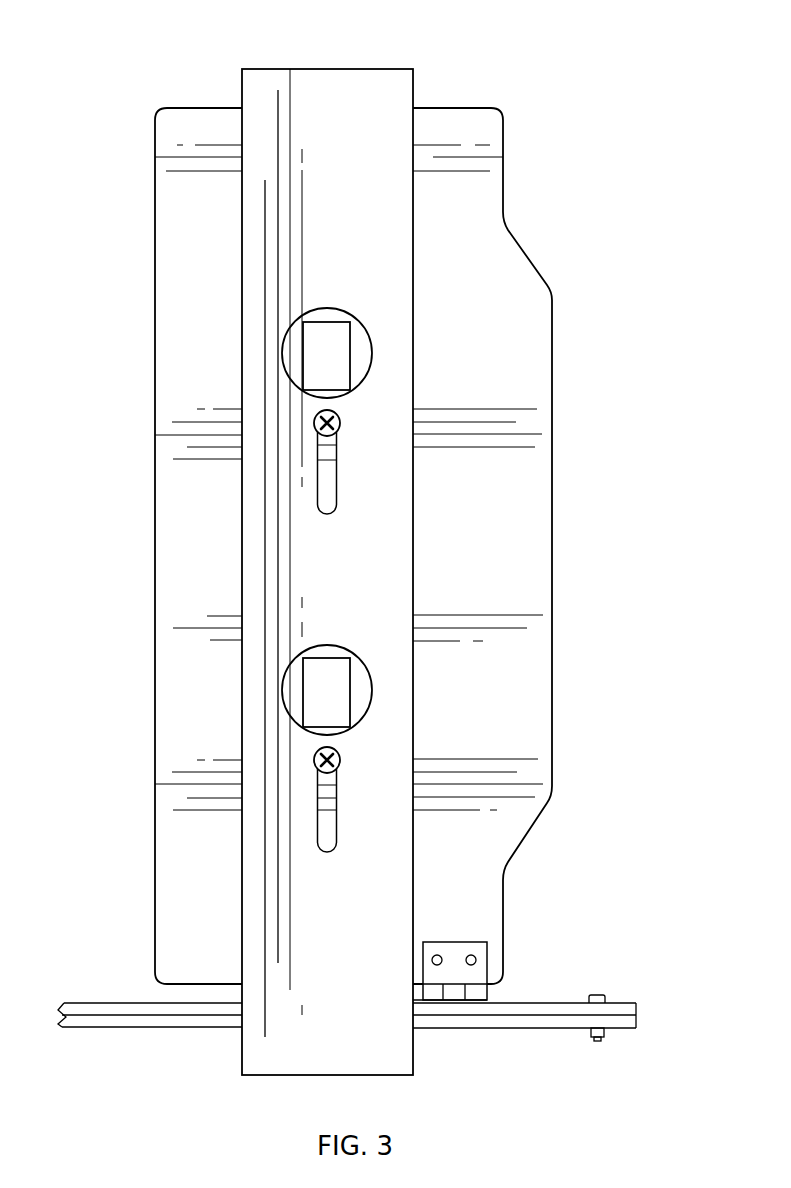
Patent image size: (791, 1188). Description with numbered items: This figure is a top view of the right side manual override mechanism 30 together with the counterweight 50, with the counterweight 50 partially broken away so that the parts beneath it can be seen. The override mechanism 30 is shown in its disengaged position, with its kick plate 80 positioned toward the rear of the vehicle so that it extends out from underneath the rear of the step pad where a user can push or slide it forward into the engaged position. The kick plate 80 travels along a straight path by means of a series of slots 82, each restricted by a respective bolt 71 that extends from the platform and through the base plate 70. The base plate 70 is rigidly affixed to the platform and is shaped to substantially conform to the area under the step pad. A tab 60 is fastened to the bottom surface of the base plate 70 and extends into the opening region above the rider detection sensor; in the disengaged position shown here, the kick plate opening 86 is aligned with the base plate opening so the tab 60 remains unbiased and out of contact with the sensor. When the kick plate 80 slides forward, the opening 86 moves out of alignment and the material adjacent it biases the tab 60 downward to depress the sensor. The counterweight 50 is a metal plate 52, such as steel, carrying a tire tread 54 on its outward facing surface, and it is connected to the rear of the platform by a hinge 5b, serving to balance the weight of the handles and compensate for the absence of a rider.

The manual override mechanism 30 is at (452, 91).
The counterweight 50 is at (87, 1040).
The plate 52 is at (616, 1007).
The tire tread 54 is at (627, 1020).
The hinge 5b is at (480, 990).
The tab 60 is at (351, 348).
The base plate 70 is at (492, 203).
The bolt 71 is at (314, 424).
The kick plate 80 is at (259, 74).
The slot 82 is at (343, 412).
The opening 86 is at (285, 367).